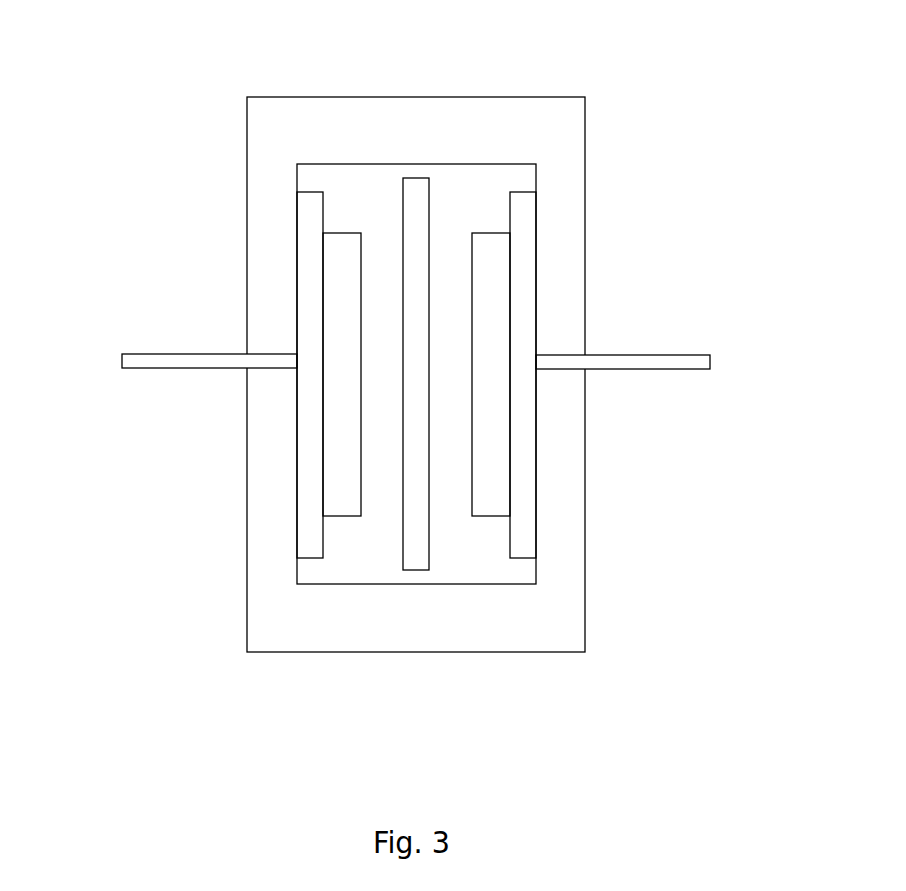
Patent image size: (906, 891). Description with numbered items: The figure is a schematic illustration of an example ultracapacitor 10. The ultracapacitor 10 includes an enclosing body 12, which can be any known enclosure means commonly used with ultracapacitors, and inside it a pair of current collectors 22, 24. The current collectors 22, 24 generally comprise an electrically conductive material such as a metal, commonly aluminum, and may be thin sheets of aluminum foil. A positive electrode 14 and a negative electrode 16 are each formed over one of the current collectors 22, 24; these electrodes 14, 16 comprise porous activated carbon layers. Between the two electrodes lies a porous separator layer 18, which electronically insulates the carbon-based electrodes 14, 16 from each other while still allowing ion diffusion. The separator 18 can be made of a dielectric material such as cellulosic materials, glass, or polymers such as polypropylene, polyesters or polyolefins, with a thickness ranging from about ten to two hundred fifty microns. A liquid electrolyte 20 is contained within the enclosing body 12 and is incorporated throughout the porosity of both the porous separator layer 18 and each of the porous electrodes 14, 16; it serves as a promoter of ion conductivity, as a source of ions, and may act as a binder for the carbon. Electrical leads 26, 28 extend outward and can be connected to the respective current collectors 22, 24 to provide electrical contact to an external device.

The ultracapacitor 10 is at (414, 383).
The enclosing body 12 is at (547, 624).
The positive electrode 14 is at (348, 503).
The negative electrode 16 is at (493, 503).
The porous separator layer 18 is at (415, 190).
The liquid electrolyte 20 is at (415, 383).
The current collector 22 is at (310, 259).
The current collector 24 is at (519, 264).
The electrical lead 26 is at (160, 361).
The electrical lead 28 is at (680, 364).